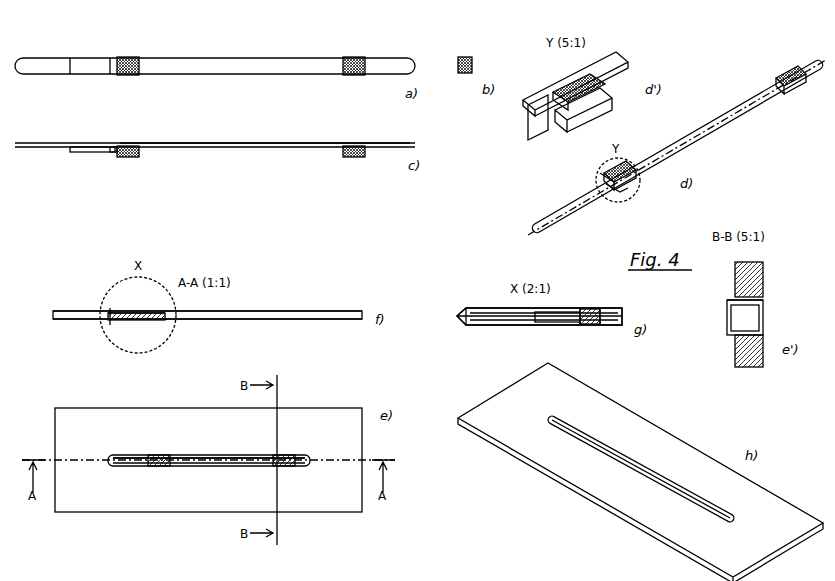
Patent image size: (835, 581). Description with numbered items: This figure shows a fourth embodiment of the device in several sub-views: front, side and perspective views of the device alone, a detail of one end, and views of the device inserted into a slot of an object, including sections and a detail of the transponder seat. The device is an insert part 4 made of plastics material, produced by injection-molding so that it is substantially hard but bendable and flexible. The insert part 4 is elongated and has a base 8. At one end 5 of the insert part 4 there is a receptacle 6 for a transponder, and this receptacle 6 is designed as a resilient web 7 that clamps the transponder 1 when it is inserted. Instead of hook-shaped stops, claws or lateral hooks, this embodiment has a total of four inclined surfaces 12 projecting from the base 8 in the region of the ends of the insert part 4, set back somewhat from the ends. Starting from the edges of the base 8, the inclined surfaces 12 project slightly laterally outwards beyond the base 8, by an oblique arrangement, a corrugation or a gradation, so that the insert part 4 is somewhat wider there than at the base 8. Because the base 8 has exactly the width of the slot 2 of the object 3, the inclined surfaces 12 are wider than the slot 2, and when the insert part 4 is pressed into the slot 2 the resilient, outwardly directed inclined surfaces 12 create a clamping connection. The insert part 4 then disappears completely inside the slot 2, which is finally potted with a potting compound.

The transponder 1 is at (497, 308).
The slot 2 is at (665, 415).
The object 3 is at (705, 435).
The insert part 4 is at (640, 400).
The end 5 is at (615, 390).
The receptacle 6 is at (585, 298).
The resilient web 7 is at (571, 285).
The base 8 is at (573, 337).
The inclined surfaces 12 is at (668, 548).